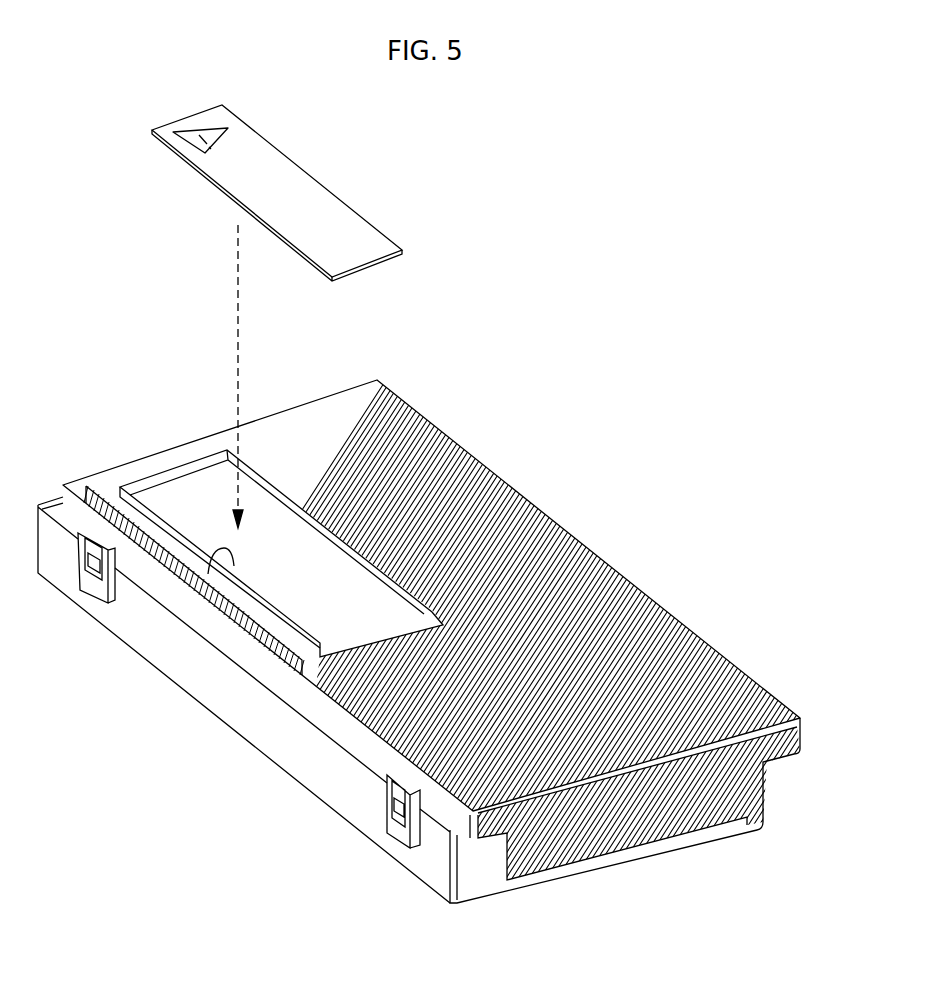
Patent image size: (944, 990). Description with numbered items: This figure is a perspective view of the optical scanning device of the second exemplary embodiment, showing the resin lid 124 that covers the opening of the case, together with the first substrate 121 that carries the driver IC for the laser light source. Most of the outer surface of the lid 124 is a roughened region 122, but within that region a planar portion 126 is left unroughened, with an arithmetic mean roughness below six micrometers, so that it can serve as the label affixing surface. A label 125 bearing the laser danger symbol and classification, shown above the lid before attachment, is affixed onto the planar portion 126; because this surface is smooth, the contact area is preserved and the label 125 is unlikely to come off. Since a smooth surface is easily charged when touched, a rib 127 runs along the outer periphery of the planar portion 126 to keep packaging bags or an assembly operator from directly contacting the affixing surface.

The first substrate 121 is at (693, 838).
The roughened region 122 is at (503, 630).
The lid 124 is at (448, 470).
The label 125 is at (383, 247).
The planar portion 126 is at (182, 507).
The rib 127 is at (220, 553).